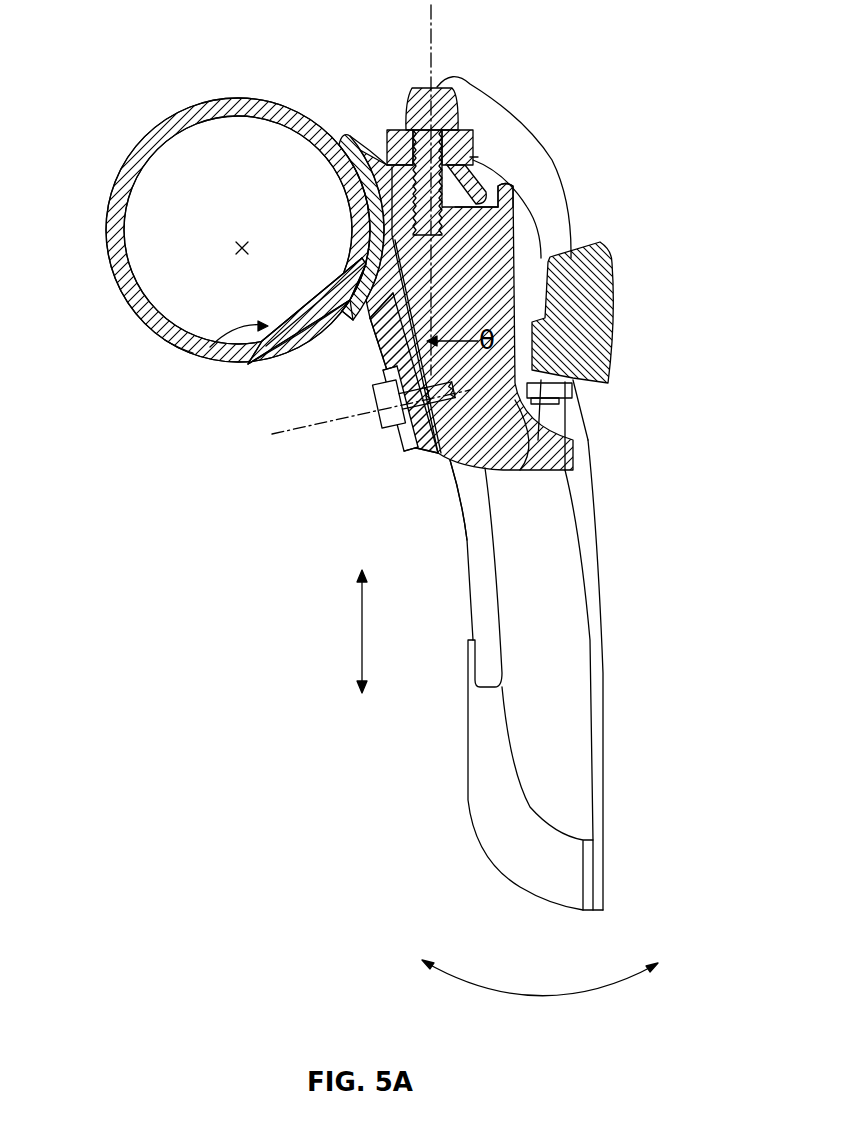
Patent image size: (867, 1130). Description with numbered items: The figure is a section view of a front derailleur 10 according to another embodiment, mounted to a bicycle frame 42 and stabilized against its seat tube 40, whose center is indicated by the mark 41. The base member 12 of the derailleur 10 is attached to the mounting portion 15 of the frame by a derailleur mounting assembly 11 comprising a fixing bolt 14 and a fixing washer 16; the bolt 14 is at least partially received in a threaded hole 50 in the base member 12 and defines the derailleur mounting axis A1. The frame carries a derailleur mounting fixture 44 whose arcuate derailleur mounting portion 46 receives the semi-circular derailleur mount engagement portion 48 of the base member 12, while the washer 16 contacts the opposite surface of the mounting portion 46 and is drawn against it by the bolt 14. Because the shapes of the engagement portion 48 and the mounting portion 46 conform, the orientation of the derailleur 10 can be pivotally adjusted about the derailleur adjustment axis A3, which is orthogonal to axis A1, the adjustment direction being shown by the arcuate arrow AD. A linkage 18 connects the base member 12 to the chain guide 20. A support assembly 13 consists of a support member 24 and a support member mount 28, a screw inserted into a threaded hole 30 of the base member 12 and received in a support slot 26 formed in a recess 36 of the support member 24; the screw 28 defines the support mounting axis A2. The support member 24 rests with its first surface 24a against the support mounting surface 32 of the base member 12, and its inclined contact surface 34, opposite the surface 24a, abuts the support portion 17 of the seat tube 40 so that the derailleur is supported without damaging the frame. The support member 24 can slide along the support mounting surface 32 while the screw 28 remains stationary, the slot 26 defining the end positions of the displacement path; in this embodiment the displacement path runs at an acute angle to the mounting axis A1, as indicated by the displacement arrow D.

The front derailleur 10 is at (642, 85).
The derailleur mounting assembly 11 is at (481, 125).
The base member 12 is at (547, 452).
The support assembly 13 is at (449, 487).
The fixing bolt 14 is at (425, 108).
The mounting portion 15 is at (370, 137).
The fixing washer 16 is at (398, 130).
The support portion 17 is at (193, 353).
The linkage 18 is at (590, 305).
The chain guide 20 is at (600, 790).
The support member 24 is at (427, 460).
The first surface 24a is at (362, 285).
The support slot 26 is at (390, 369).
The support member mount 28 is at (372, 404).
The threaded hole 30 is at (411, 402).
The support mounting surface 32 is at (368, 330).
The contact surface 34 is at (352, 305).
The recess 36 is at (330, 300).
The seat tube 40 is at (188, 112).
The handlebar center axis 41 is at (236, 249).
The bicycle frame 42 is at (86, 138).
The derailleur mounting fixture 44 is at (346, 134).
The derailleur mounting portion 46 is at (468, 177).
The derailleur mount engagement portion 48 is at (503, 200).
The threaded hole 50 is at (470, 210).
The derailleur mounting axis A1 is at (436, 52).
The support mounting axis A2 is at (310, 427).
The derailleur adjustment axis A3 is at (477, 157).
The displacement direction arrow D is at (352, 651).
The adjustment direction arrow AD is at (540, 1012).